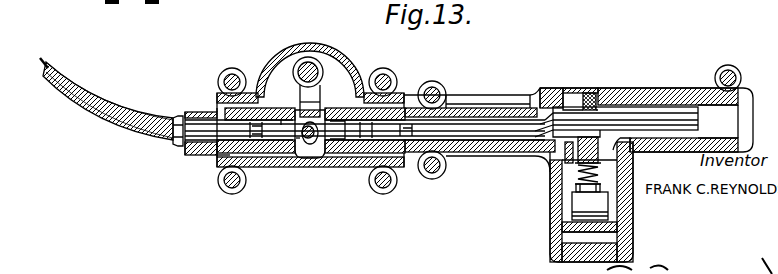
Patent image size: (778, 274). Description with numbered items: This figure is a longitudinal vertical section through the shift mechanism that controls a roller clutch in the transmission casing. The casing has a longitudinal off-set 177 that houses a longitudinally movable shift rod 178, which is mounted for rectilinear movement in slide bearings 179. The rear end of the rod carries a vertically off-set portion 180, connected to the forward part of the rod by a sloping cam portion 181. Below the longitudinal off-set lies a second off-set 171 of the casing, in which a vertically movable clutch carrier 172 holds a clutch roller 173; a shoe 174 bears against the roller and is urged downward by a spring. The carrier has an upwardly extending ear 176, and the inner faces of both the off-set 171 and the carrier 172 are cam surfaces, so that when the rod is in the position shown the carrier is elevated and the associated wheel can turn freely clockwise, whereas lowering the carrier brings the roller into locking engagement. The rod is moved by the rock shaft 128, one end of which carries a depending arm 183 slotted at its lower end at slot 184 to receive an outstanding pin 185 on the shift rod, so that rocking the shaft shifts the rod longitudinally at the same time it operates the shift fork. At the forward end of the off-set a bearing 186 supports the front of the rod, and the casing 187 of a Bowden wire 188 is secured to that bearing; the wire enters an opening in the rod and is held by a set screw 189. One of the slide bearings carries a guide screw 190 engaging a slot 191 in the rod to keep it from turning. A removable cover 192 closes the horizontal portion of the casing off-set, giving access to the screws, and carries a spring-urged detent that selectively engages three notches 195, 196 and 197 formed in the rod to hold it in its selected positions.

The rock shaft 128 is at (312, 57).
The off-set 171 is at (564, 238).
The clutch carrier 172 is at (577, 192).
The clutch roller 173 is at (574, 207).
The shoe 174 is at (582, 182).
The ear 176 is at (592, 90).
The longitudinal off-set 177 is at (492, 109).
The shift rod 178 is at (484, 137).
The slide bearings 179 is at (471, 106).
The vertically off-set portion 180 is at (658, 112).
The sloping cam portion 181 is at (586, 100).
The depending arm 183 is at (321, 95).
The slot 184 is at (309, 138).
The pin 185 is at (305, 160).
The bearing 186 is at (218, 108).
The casing 187 is at (161, 133).
The Bowden wire 188 is at (45, 60).
The set screw 189 is at (213, 157).
The guide screw 190 is at (357, 142).
The slot 191 is at (345, 140).
The cover 192 is at (412, 93).
The notch 195 is at (280, 126).
The notch 196 is at (299, 138).
The notch 197 is at (326, 122).